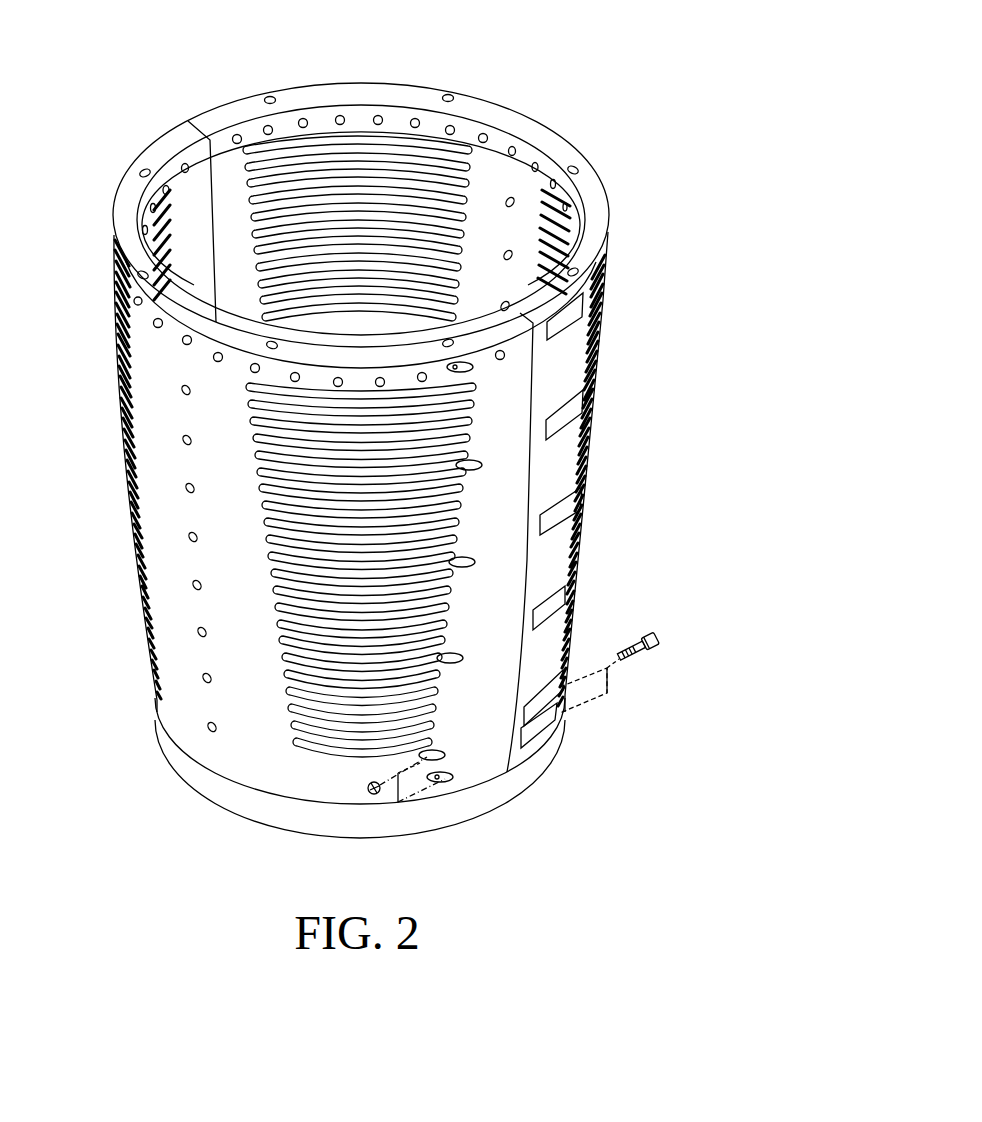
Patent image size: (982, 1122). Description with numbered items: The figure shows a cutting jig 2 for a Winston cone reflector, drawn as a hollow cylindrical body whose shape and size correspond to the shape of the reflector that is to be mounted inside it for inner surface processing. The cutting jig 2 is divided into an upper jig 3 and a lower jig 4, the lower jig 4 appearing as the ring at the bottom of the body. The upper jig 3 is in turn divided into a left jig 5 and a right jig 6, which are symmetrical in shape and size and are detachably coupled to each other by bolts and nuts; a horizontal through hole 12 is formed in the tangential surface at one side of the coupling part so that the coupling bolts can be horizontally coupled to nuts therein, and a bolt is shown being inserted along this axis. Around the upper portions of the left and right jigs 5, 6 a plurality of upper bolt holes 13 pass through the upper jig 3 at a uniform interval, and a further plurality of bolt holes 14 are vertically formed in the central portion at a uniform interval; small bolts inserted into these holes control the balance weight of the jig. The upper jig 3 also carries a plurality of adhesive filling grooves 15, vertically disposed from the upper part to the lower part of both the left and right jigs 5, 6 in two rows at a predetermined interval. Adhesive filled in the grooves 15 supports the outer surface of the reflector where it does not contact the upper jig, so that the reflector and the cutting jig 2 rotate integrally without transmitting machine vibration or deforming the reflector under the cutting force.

The cutting jig 2 is at (633, 163).
The upper jig 3 is at (361, 180).
The lower jig 4 is at (193, 782).
The left jig 5 is at (165, 150).
The right jig 6 is at (223, 112).
The horizontal through hole 12 is at (467, 559).
The upper bolt holes 13 is at (512, 150).
The bolt holes 14 is at (508, 201).
The adhesive filling grooves 15 is at (390, 150).